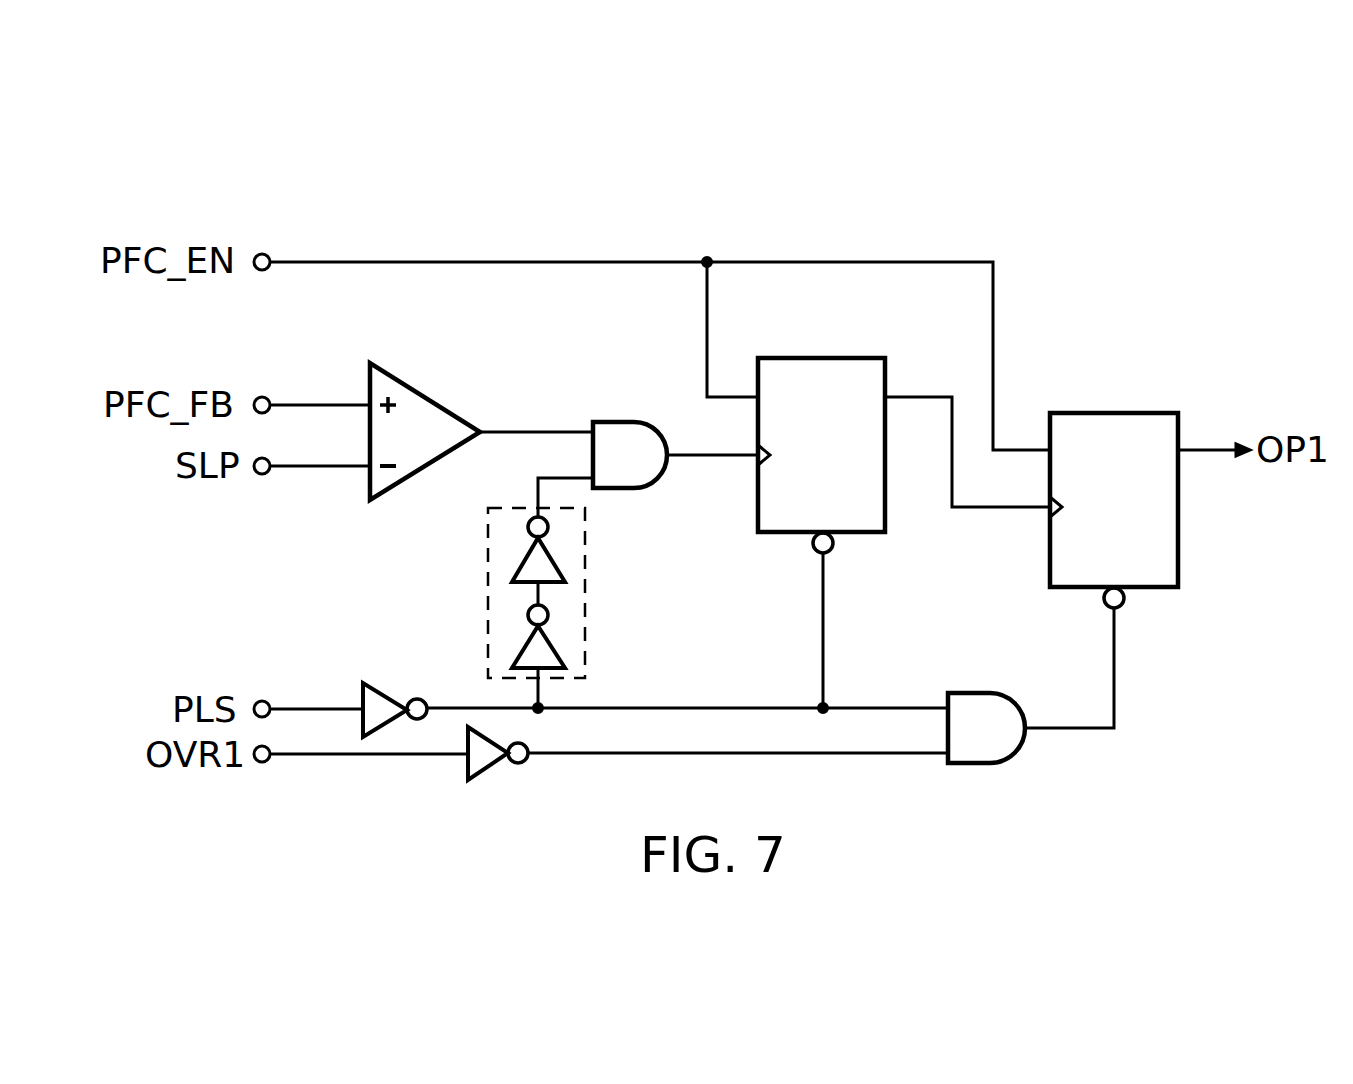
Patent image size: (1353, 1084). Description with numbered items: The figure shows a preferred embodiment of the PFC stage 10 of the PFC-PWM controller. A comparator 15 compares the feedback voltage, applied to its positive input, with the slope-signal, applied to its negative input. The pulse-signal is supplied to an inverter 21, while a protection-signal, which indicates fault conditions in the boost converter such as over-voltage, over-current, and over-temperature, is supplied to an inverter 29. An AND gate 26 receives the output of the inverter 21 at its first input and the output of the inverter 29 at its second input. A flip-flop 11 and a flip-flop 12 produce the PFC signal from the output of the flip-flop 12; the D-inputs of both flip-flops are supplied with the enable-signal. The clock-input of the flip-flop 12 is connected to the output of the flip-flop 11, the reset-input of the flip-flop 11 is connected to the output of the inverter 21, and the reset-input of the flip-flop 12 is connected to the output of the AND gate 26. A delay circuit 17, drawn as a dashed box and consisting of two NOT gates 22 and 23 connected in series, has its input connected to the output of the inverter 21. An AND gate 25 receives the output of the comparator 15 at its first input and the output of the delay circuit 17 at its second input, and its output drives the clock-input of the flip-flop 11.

The PFC stage 10 is at (1106, 203).
The comparator 15 is at (413, 383).
The AND gate 25 is at (622, 421).
The flip-flop 11 is at (828, 357).
The flip-flop 12 is at (1128, 412).
The delay circuit 17 is at (487, 552).
The NOT gate 22 is at (560, 557).
The NOT gate 23 is at (560, 645).
The inverter 21 is at (384, 690).
The inverter 29 is at (492, 787).
The AND gate 26 is at (978, 691).